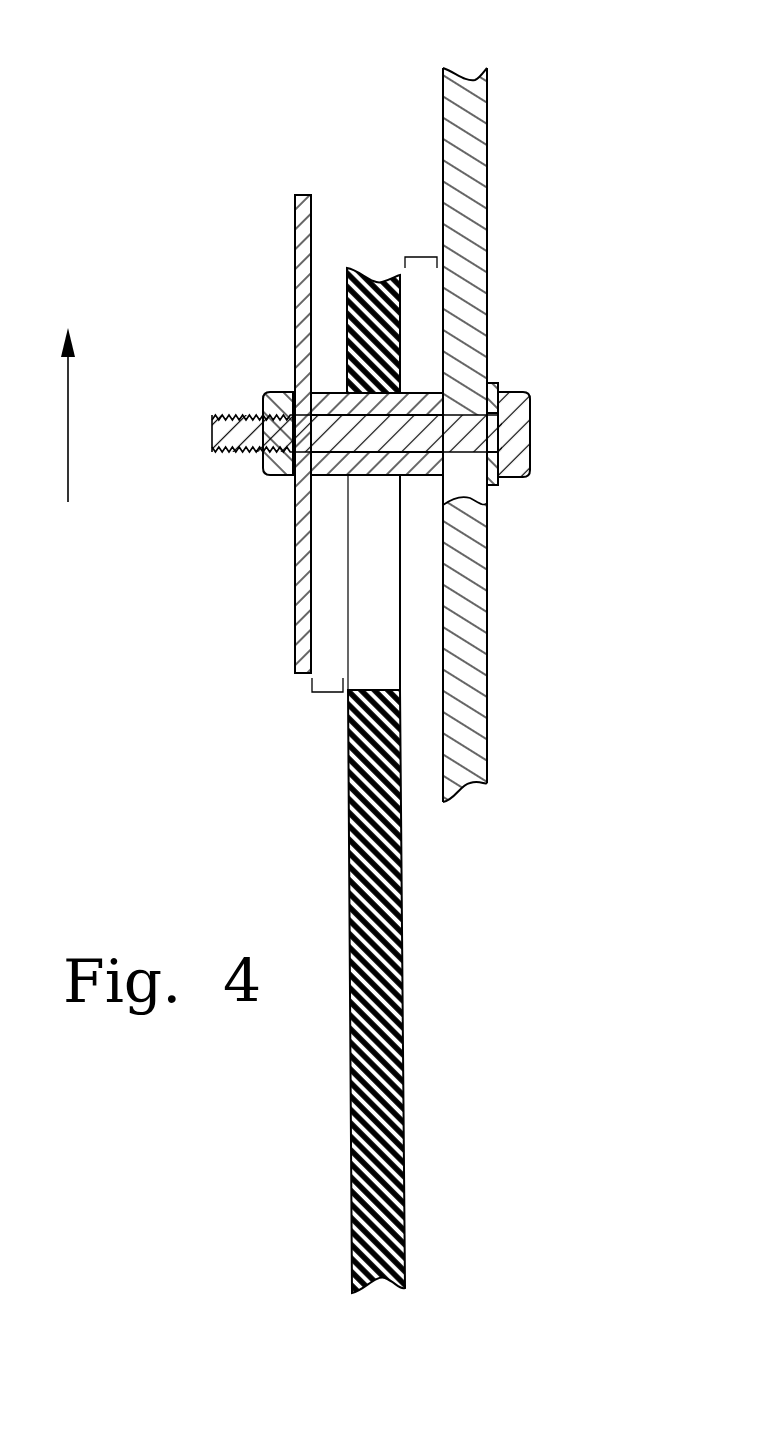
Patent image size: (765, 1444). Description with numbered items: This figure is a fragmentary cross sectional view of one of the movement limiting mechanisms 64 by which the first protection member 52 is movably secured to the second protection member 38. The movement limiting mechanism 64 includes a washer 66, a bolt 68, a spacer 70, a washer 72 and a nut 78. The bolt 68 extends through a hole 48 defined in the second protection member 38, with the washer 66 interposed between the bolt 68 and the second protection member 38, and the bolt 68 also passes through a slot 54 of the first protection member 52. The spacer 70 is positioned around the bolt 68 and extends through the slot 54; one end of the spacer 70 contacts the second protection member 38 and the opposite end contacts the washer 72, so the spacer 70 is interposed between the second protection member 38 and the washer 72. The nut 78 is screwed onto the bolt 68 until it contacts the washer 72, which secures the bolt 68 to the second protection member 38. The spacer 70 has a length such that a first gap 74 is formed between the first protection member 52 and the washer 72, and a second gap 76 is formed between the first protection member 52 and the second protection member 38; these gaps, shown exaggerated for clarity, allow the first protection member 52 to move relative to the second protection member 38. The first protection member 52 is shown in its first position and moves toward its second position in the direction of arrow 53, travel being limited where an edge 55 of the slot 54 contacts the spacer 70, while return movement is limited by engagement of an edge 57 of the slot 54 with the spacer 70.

The second protection member 38 is at (488, 80).
The hole 48 is at (478, 502).
The first protection member 52 is at (402, 1020).
The arrow 53 is at (69, 428).
The slot 54 is at (400, 533).
The edge of slot 55 is at (393, 690).
The edge of slot 57 is at (405, 392).
The movement limiting mechanism 64 is at (555, 380).
The washer 66 is at (495, 383).
The bolt 68 is at (531, 436).
The spacer 70 is at (326, 392).
The washer 72 is at (298, 194).
The first gap 74 is at (325, 693).
The second gap 76 is at (422, 256).
The nut 78 is at (276, 478).